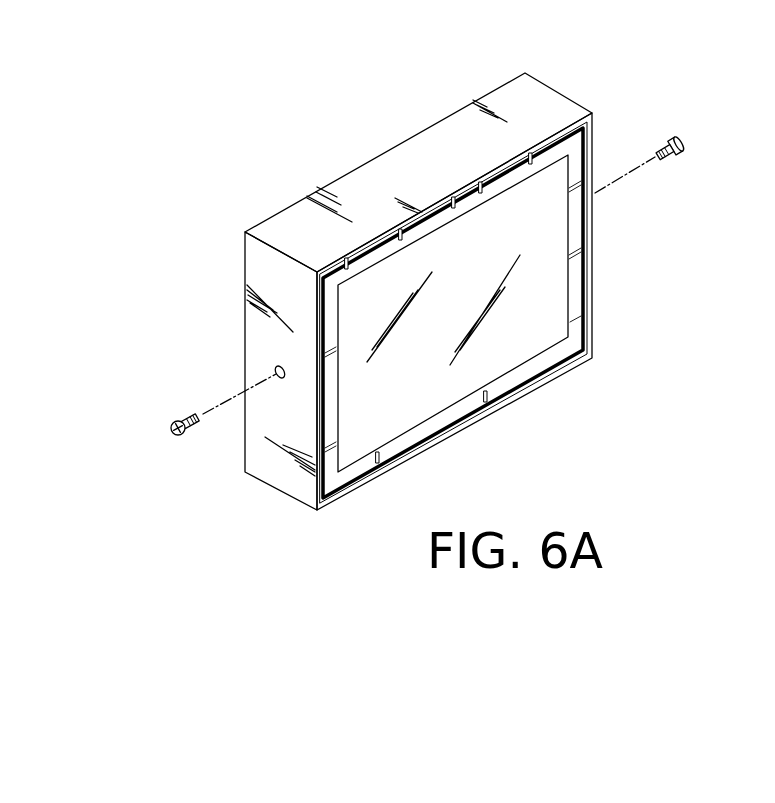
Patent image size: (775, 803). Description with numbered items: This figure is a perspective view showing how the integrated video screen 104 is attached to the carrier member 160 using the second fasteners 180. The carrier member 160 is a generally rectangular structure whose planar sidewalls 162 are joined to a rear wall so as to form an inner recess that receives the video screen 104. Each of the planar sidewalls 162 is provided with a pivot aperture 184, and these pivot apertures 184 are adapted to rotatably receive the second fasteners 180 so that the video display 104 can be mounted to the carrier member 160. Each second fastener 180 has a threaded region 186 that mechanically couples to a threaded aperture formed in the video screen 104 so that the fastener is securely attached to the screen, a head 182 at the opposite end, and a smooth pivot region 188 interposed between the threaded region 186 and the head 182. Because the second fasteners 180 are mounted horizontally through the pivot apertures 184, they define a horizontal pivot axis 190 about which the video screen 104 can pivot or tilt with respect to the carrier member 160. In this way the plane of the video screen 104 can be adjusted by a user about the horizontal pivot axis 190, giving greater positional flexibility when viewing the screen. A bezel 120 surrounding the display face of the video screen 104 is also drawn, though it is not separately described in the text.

The integrated video screen 104 is at (520, 340).
The bezel frame 120 is at (575, 158).
The carrier member 160 is at (288, 220).
The planar sidewalls 162 is at (280, 480).
The second fasteners 180 is at (421, 301).
The head 182 is at (182, 437).
The pivot apertures 184 is at (277, 367).
The threaded region 186 is at (198, 416).
The smooth pivot region 188 is at (172, 423).
The horizontal pivot axis 190 is at (219, 397).